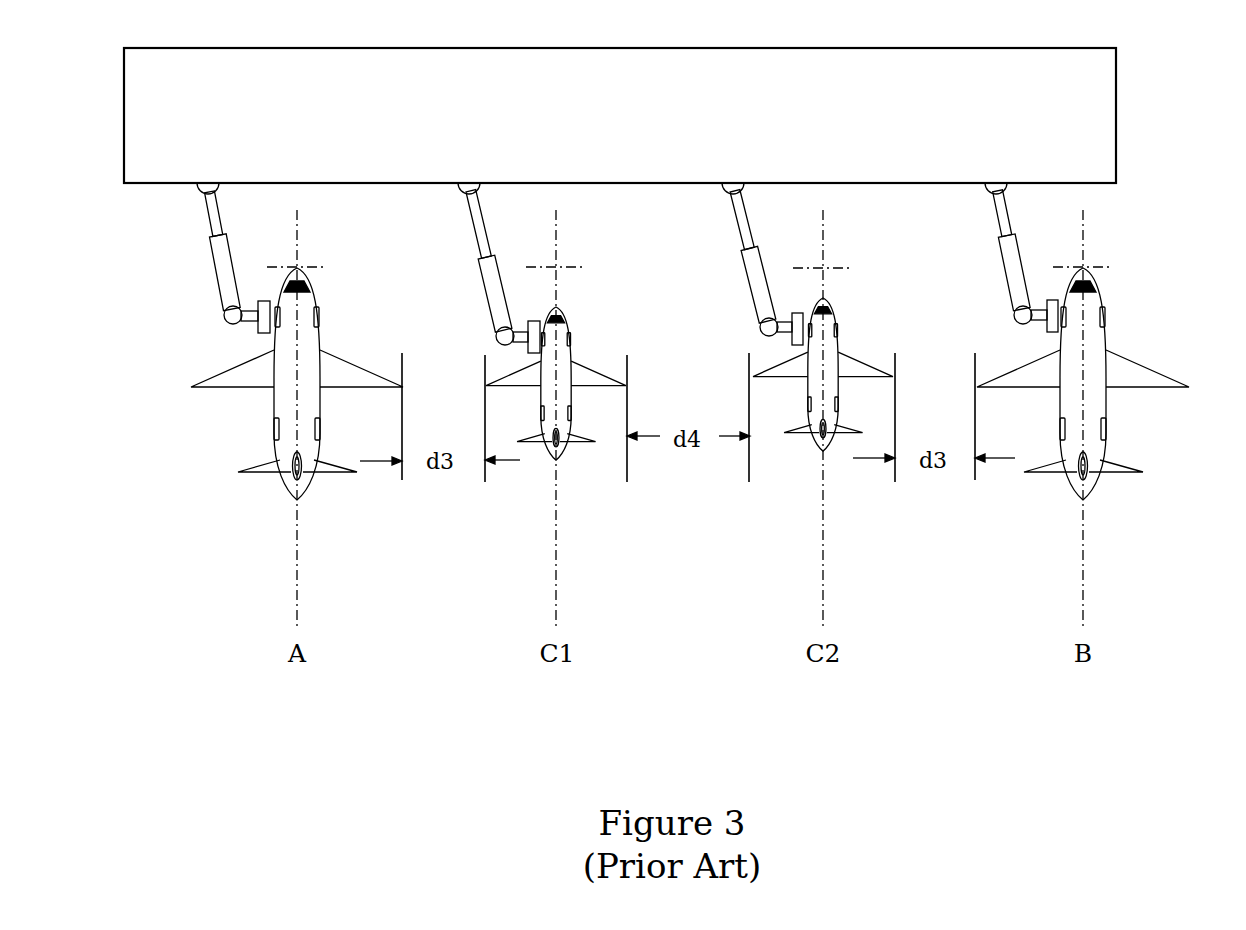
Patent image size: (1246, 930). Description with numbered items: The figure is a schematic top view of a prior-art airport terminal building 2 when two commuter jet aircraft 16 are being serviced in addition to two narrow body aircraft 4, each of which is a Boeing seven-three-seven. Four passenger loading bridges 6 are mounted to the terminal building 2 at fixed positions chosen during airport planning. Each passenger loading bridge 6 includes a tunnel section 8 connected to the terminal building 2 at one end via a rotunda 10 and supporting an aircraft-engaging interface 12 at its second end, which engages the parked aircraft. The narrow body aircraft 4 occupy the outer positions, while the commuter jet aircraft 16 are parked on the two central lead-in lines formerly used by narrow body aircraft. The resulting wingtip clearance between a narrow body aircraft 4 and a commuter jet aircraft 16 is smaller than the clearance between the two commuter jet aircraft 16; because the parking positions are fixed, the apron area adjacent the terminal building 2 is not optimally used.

The airport terminal building 2 is at (677, 115).
The narrow body aircraft 4 is at (290, 392).
The passenger loading bridge 6 is at (167, 315).
The tunnel section 8 is at (177, 304).
The rotunda 10 is at (147, 220).
The aircraft-engaging interface 12 is at (181, 374).
The commuter jet aircraft 16 is at (529, 491).